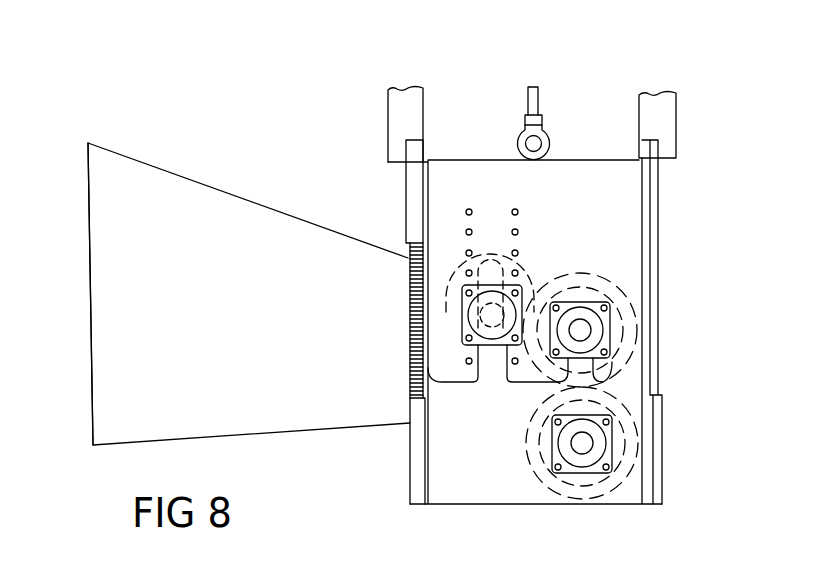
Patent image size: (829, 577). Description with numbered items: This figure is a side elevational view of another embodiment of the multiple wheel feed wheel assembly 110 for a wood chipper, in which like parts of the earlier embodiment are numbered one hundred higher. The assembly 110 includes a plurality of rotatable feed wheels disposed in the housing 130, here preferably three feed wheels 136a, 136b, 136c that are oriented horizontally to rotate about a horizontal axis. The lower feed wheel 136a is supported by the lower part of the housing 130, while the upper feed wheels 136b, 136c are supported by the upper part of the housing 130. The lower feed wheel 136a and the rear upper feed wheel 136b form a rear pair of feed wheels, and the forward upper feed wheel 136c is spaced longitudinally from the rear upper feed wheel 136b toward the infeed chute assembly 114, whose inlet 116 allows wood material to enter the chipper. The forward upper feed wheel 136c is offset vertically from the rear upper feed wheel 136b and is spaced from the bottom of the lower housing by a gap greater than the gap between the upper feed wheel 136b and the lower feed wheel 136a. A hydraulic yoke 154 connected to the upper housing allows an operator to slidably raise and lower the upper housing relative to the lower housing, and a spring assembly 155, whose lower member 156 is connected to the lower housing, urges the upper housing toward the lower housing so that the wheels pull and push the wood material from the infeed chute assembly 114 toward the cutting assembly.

The multiple wheel feed wheel assembly 110 is at (586, 92).
The infeed chute assembly 114 is at (201, 183).
The inlet 116 is at (90, 295).
The housing 130 is at (645, 516).
The lower feed wheel 136a is at (630, 441).
The upper feed wheel 136b is at (627, 318).
The upper feed wheel 136c is at (523, 272).
The hydraulic yoke 154 is at (525, 118).
The spring assembly 155 is at (386, 212).
The lower member 156 is at (415, 476).